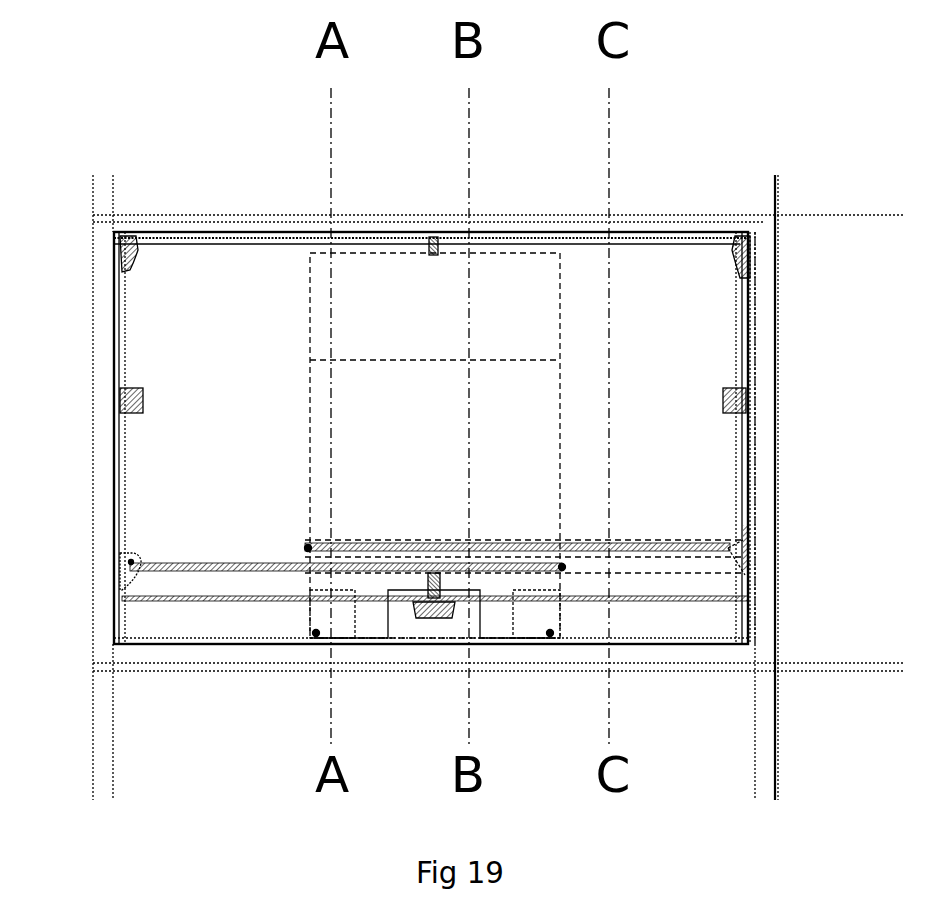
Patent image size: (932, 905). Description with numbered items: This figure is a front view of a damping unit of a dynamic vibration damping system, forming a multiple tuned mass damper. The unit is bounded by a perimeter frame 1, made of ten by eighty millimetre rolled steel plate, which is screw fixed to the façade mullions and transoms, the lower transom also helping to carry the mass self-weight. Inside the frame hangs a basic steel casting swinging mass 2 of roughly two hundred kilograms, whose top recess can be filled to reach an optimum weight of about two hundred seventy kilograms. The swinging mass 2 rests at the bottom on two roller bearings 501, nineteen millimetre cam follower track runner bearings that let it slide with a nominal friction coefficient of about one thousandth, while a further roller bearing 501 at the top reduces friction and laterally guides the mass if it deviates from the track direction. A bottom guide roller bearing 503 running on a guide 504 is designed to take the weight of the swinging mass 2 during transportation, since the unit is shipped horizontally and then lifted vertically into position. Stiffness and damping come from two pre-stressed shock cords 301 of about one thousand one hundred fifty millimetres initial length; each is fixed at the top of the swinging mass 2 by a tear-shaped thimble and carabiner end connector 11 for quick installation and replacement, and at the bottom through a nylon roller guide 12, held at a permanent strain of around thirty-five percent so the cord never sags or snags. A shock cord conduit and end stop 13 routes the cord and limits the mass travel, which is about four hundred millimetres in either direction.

The perimeter frame 1 is at (754, 330).
The swinging mass 2 is at (315, 275).
The carabiner end connector 11 is at (125, 247).
The roller guide 12 is at (130, 572).
The shock cord conduit and end stop 13 is at (562, 567).
The shock cord 301 is at (752, 318).
The roller bearing 501 is at (316, 633).
The bottom guide roller bearing 503 is at (430, 582).
The guide 504 is at (740, 617).